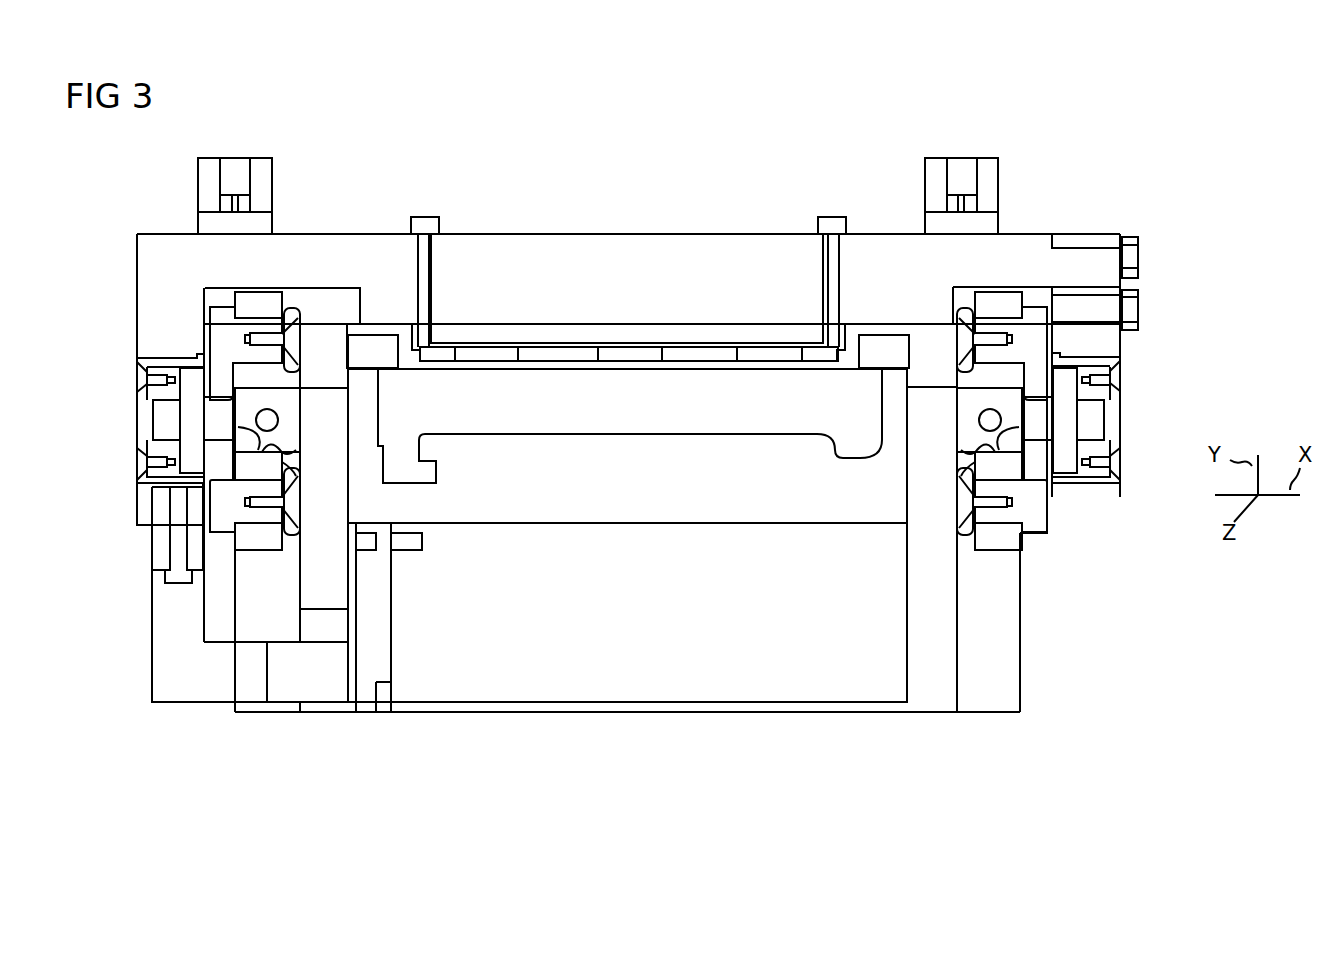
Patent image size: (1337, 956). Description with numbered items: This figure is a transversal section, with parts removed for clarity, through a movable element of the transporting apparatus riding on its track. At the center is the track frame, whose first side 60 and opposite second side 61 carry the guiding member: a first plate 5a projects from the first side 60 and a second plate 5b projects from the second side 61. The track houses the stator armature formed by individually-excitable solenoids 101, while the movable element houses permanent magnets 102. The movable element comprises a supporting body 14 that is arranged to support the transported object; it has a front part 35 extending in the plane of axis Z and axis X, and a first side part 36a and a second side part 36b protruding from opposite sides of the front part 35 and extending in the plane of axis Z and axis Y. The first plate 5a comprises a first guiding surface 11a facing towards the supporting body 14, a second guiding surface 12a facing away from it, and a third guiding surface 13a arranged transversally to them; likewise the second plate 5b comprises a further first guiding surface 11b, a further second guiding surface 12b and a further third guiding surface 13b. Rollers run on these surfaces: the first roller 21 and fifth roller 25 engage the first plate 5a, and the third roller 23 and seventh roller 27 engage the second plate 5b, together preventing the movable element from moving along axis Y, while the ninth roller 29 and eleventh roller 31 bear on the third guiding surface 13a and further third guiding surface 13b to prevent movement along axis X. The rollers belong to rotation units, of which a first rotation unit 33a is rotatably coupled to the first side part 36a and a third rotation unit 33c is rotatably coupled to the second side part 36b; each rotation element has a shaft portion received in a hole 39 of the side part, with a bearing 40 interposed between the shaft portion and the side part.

The supporting body 14 is at (490, 212).
The third rotation unit 33c is at (190, 268).
The first rotation unit 33a is at (1160, 268).
The second side part 36b is at (138, 300).
The first side part 36a is at (1116, 347).
The front part 35 is at (562, 248).
The permanent magnets 102 is at (622, 337).
The first side 60 is at (878, 424).
The individually-excitable solenoids 101 is at (604, 428).
The second side 61 is at (336, 388).
The third roller 23 is at (257, 300).
The first roller 21 is at (992, 298).
The seventh roller 27 is at (264, 556).
The fifth roller 25 is at (1016, 544).
The further first guiding surface 11b is at (286, 392).
The first guiding surface 11a is at (974, 392).
The second plate 5b is at (287, 428).
The first plate 5a is at (968, 428).
The further second guiding surface 12b is at (278, 454).
The second guiding surface 12a is at (974, 454).
The further third guiding surface 13b is at (272, 452).
The third guiding surface 13a is at (992, 456).
The eleventh roller 31 is at (158, 420).
The ninth roller 29 is at (1096, 424).
The hole 39 is at (144, 362).
The bearing 40 is at (180, 362).